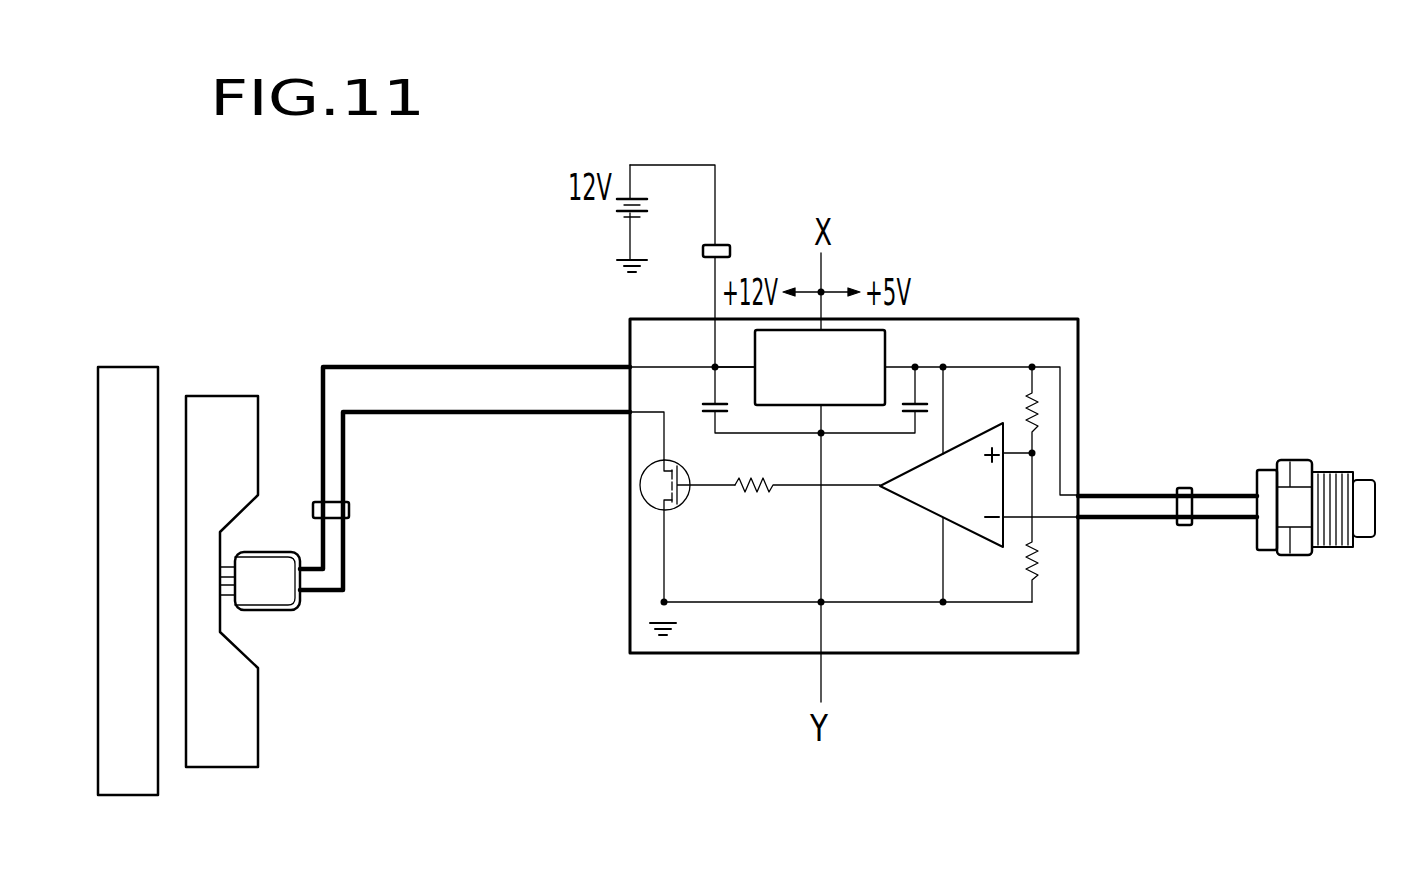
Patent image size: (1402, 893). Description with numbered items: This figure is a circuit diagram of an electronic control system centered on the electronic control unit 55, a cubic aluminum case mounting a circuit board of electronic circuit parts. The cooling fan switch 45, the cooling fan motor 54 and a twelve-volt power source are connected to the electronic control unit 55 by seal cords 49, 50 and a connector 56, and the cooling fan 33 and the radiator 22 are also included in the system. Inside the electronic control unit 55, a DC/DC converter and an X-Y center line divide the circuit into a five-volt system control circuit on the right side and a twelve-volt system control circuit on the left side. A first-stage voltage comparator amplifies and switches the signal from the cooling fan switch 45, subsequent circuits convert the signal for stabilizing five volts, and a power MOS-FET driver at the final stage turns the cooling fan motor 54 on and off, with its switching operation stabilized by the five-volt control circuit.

The radiator 22 is at (132, 367).
The cooling fan 33 is at (236, 396).
The cooling fan switch 45 is at (1297, 461).
The seal cord 49 is at (525, 365).
The seal cord 50 is at (545, 414).
The cooling fan motor 54 is at (275, 612).
The electronic control unit 55 is at (1043, 323).
The connector 56 is at (345, 508).